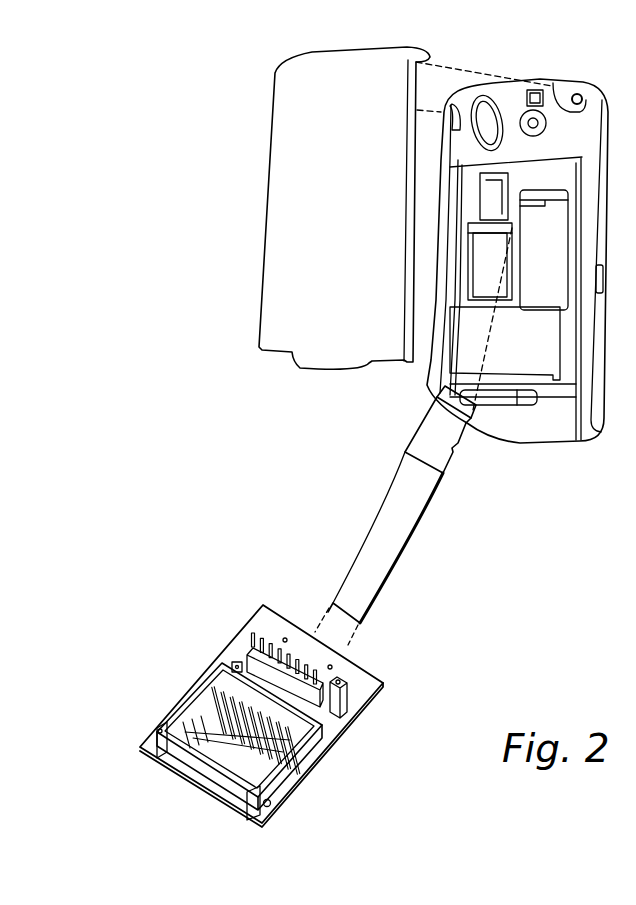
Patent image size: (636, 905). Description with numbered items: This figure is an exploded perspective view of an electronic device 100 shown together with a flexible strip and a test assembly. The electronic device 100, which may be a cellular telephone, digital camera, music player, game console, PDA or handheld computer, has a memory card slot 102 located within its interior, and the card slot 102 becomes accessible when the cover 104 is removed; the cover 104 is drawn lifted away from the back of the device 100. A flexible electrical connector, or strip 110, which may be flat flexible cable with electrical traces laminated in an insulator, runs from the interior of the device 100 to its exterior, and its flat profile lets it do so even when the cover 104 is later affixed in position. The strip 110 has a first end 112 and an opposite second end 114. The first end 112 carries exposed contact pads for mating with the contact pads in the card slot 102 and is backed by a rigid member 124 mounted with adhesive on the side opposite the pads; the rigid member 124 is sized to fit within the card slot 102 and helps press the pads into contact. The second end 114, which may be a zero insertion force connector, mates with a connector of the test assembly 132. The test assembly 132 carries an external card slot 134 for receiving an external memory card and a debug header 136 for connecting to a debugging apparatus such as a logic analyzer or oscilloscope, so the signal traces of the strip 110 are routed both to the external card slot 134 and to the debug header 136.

The electronic device 100 is at (573, 82).
The memory card slot 102 is at (504, 274).
The cover 104 is at (353, 175).
The flexible electrical connector, or strip 110 is at (392, 515).
The first end 112 is at (471, 416).
The second end 114 is at (356, 627).
The rigid member 124 is at (431, 437).
The test assembly 132 is at (257, 620).
The external card slot 134 is at (212, 760).
The debug header 136 is at (248, 654).